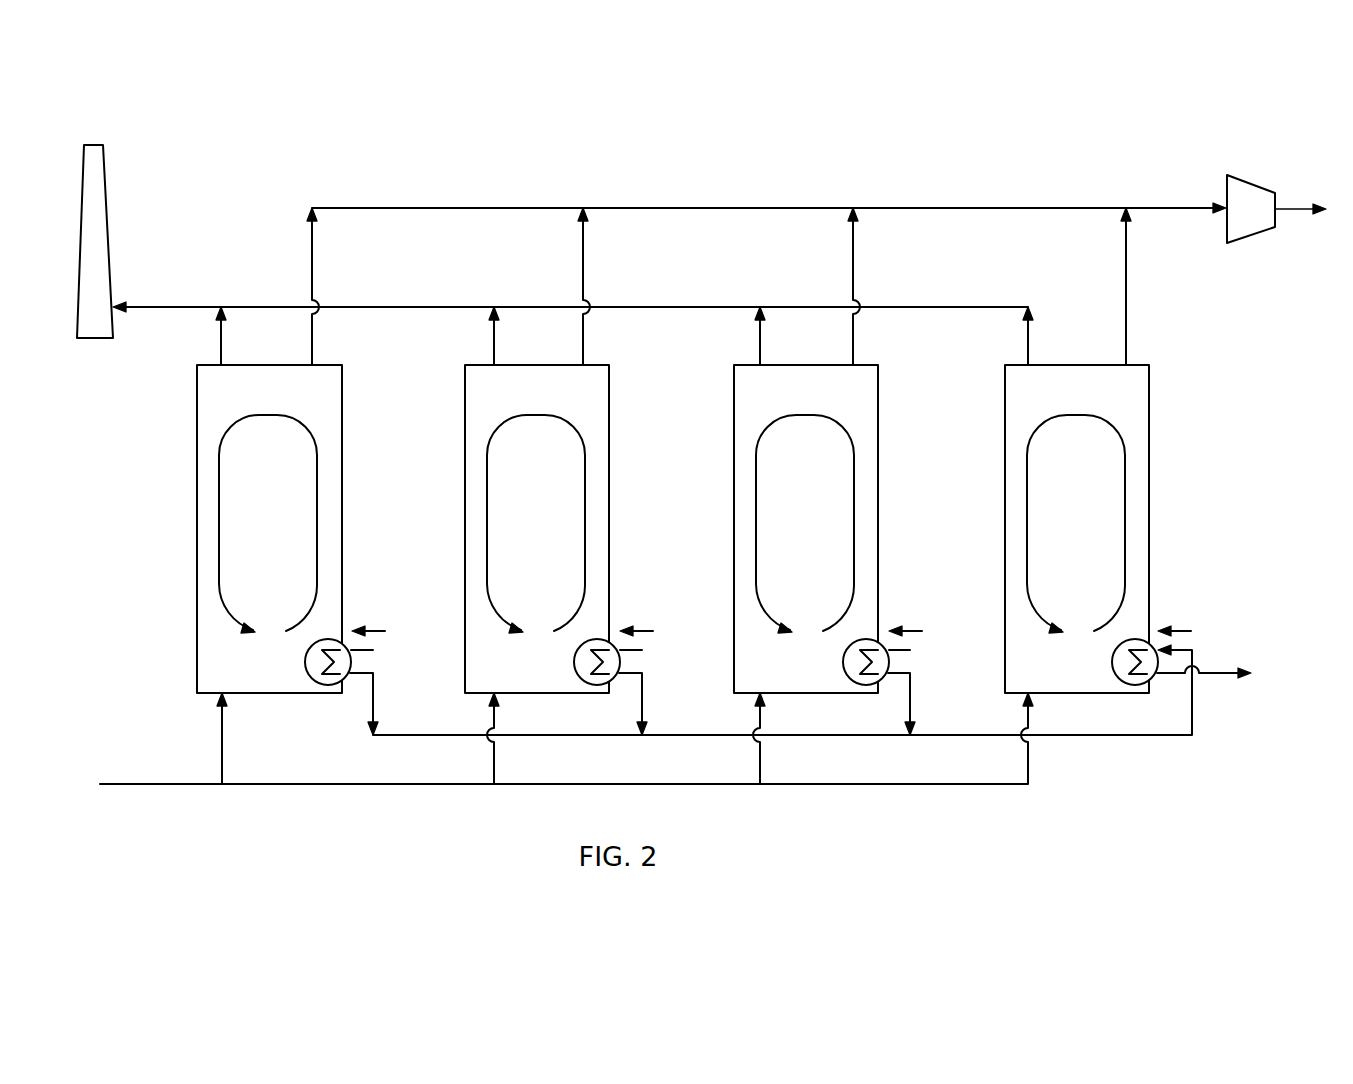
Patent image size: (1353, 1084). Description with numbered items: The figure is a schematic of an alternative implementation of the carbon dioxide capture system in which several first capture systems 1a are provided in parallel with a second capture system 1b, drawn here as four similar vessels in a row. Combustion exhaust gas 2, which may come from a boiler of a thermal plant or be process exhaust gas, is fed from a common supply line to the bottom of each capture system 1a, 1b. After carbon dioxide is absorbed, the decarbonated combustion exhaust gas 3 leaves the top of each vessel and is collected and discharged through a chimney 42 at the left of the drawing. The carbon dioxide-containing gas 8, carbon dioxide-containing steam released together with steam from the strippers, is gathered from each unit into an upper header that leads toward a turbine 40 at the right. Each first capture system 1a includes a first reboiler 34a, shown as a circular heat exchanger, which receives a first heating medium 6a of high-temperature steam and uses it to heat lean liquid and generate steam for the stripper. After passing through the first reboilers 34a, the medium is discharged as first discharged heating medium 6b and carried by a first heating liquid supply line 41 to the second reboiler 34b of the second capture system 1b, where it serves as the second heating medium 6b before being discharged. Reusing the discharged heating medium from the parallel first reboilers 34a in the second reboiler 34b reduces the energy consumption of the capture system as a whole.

The first capture system 1a is at (187, 492).
The second capture system 1b is at (994, 492).
The combustion exhaust gas 2 is at (140, 772).
The decarbonated combustion exhaust gas 3 is at (197, 336).
The first heating medium 6a is at (373, 629).
The first discharged heating medium 6b is at (1175, 629).
The carbon dioxide-containing gas 8 is at (327, 245).
The first reboiler 34a is at (303, 664).
The second reboiler 34b is at (1110, 664).
The turbine 40 is at (1256, 185).
The first heating liquid supply line 41 is at (420, 732).
The chimney 42 is at (108, 207).